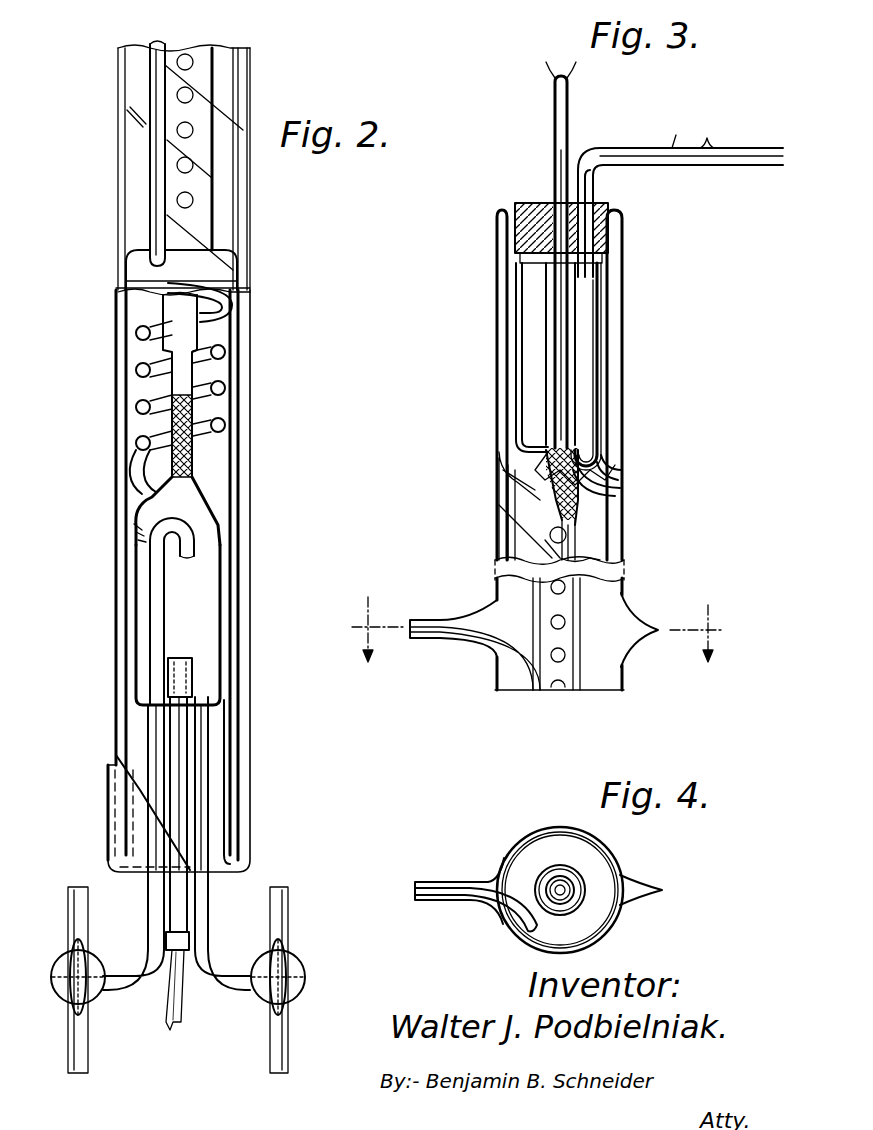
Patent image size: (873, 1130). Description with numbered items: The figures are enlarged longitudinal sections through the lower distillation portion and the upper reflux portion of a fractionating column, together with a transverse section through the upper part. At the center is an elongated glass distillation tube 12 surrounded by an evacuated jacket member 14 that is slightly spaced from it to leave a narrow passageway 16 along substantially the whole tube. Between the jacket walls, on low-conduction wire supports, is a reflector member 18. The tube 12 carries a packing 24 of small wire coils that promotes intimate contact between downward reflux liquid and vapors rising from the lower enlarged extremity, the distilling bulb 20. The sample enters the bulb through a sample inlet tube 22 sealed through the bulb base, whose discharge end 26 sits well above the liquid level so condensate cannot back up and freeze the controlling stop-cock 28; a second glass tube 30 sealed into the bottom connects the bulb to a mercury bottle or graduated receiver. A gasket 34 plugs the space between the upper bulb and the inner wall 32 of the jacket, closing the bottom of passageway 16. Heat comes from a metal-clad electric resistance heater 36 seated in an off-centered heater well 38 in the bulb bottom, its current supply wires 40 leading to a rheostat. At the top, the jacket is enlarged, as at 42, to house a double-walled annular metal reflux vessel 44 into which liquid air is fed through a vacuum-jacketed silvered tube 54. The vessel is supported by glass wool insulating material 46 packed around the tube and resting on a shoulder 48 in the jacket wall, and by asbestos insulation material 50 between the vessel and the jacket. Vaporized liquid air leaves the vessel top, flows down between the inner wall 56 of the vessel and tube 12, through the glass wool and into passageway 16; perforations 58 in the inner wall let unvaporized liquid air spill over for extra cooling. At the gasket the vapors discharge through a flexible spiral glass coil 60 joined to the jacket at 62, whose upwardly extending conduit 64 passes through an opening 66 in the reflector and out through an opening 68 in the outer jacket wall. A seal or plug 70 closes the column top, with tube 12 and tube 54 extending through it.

In FIG. 2, the distillation tube 12 is at (185, 378).
In FIG. 3, the distillation tube 12 is at (573, 140).
In FIG. 2, the evacuated jacket member 14 is at (232, 463).
In FIG. 2, the passageway 16 is at (185, 407).
In FIG. 3, the passageway 16 is at (574, 530).
In FIG. 2, the reflector member 18 is at (212, 249).
In FIG. 3, the reflector member 18 is at (610, 308).
In FIG. 2, the distilling bulb 20 is at (220, 612).
In FIG. 2, the sample inlet tube 22 is at (155, 714).
In FIG. 2, the packing 24 is at (213, 447).
In FIG. 3, the packing 24 is at (540, 480).
In FIG. 2, the discharge end 26 is at (192, 550).
In FIG. 2, the stopcocks 28 is at (87, 965).
In FIG. 2, the second glass tube 30 is at (208, 750).
In FIG. 2, the inner wall of jacket 32 is at (136, 535).
In FIG. 2, the gasket 34 is at (145, 518).
In FIG. 2, the electric resistance heater 36 is at (184, 900).
In FIG. 2, the heater well 38 is at (192, 668).
In FIG. 2, the current supply wires 40 is at (166, 1010).
In FIG. 3, the enlarged portion of jacket 42 is at (600, 359).
In FIG. 3, the reflux vessel 44 is at (593, 383).
In FIG. 3, the glass wool insulating material 46 is at (606, 459).
In FIG. 3, the shoulder 48 is at (582, 481).
In FIG. 3, the insulation material 50 is at (603, 333).
In FIG. 3, the vacuum-jacketed silvered tube 54 is at (687, 165).
In FIG. 3, the inner wall of vessel 56 is at (545, 312).
In FIG. 3, the perforations 58 is at (545, 363).
In FIG. 2, the spiral glass coil 60 is at (138, 392).
In FIG. 2, the coil joint 62 is at (140, 446).
In FIG. 2, the upwardly extending conduit 64 is at (156, 168).
In FIG. 3, the upwardly extending conduit 64 is at (527, 680).
In FIG. 2, the opening in reflector 66 is at (135, 256).
In FIG. 4, the opening in reflector 66 is at (535, 930).
In FIG. 3, the opening in outer wall of jacket 68 is at (470, 620).
In FIG. 4, the opening in outer wall of jacket 68 is at (456, 882).
In FIG. 3, the seal or plug 70 is at (540, 200).